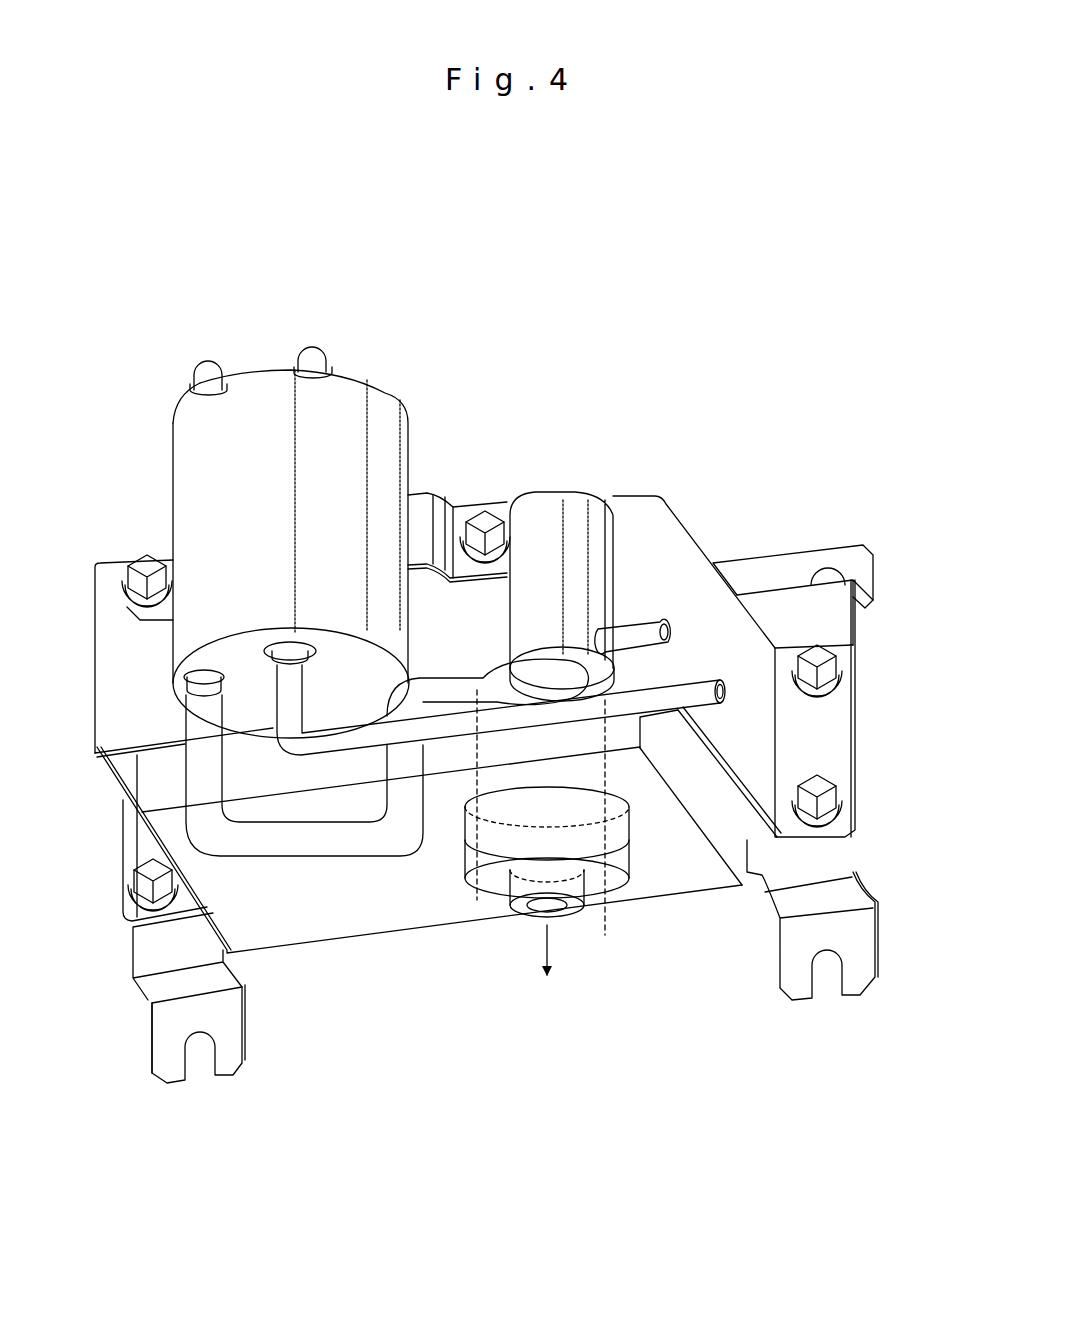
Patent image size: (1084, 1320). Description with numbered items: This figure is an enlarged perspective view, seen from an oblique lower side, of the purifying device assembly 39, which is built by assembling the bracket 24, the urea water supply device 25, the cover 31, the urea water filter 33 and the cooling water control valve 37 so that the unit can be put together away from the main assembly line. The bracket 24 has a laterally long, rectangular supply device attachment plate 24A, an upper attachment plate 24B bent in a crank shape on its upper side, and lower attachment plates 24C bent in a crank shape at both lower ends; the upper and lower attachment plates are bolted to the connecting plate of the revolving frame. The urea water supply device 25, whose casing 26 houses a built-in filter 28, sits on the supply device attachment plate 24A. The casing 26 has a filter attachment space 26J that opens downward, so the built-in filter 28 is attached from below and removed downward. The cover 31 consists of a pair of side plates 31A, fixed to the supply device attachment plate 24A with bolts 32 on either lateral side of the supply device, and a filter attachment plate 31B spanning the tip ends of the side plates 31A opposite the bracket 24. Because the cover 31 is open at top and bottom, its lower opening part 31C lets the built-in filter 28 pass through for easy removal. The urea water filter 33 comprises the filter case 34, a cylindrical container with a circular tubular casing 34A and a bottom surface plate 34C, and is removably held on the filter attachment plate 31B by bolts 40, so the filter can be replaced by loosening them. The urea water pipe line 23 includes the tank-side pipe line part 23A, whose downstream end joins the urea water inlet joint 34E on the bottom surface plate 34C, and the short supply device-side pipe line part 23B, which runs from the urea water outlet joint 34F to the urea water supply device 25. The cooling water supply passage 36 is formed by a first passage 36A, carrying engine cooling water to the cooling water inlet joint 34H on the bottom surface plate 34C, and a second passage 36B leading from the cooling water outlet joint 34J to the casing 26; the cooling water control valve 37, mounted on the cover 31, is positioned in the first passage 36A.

The urea water pipe line 23 is at (380, 760).
The tank-side pipe line part 23A is at (700, 675).
The supply device-side pipe line part 23B is at (312, 348).
The bracket 24 is at (748, 573).
The supply device attachment plate 24A is at (792, 620).
The upper attachment plate 24B is at (840, 563).
The lower attachment plates 24C is at (225, 1052).
The urea water supply device 25 is at (430, 908).
The casing 26 is at (653, 877).
The filter attachment space 26J is at (552, 828).
The built-in filter 28 is at (493, 880).
The cover 31 is at (628, 507).
The side plates 31A is at (752, 720).
The filter attachment plate 31B is at (443, 600).
The opening part 31C is at (705, 755).
The bolts 32 is at (817, 662).
The urea water filter 33 is at (388, 392).
The filter case 34 is at (257, 400).
The circular tubular casing 34A is at (185, 450).
The bottom surface plate 34C is at (257, 740).
The urea water inlet joint 34E is at (302, 642).
The urea water outlet joint 34F is at (313, 372).
The cooling water inlet joint 34H is at (206, 672).
The cooling water outlet joint 34J is at (193, 392).
The cooling water supply passage 36 is at (270, 865).
The first passage 36A is at (330, 865).
The second passage 36B is at (207, 366).
The cooling water control valve 37 is at (575, 505).
The purifying device assembly 39 is at (685, 493).
The bolts 40 is at (145, 575).